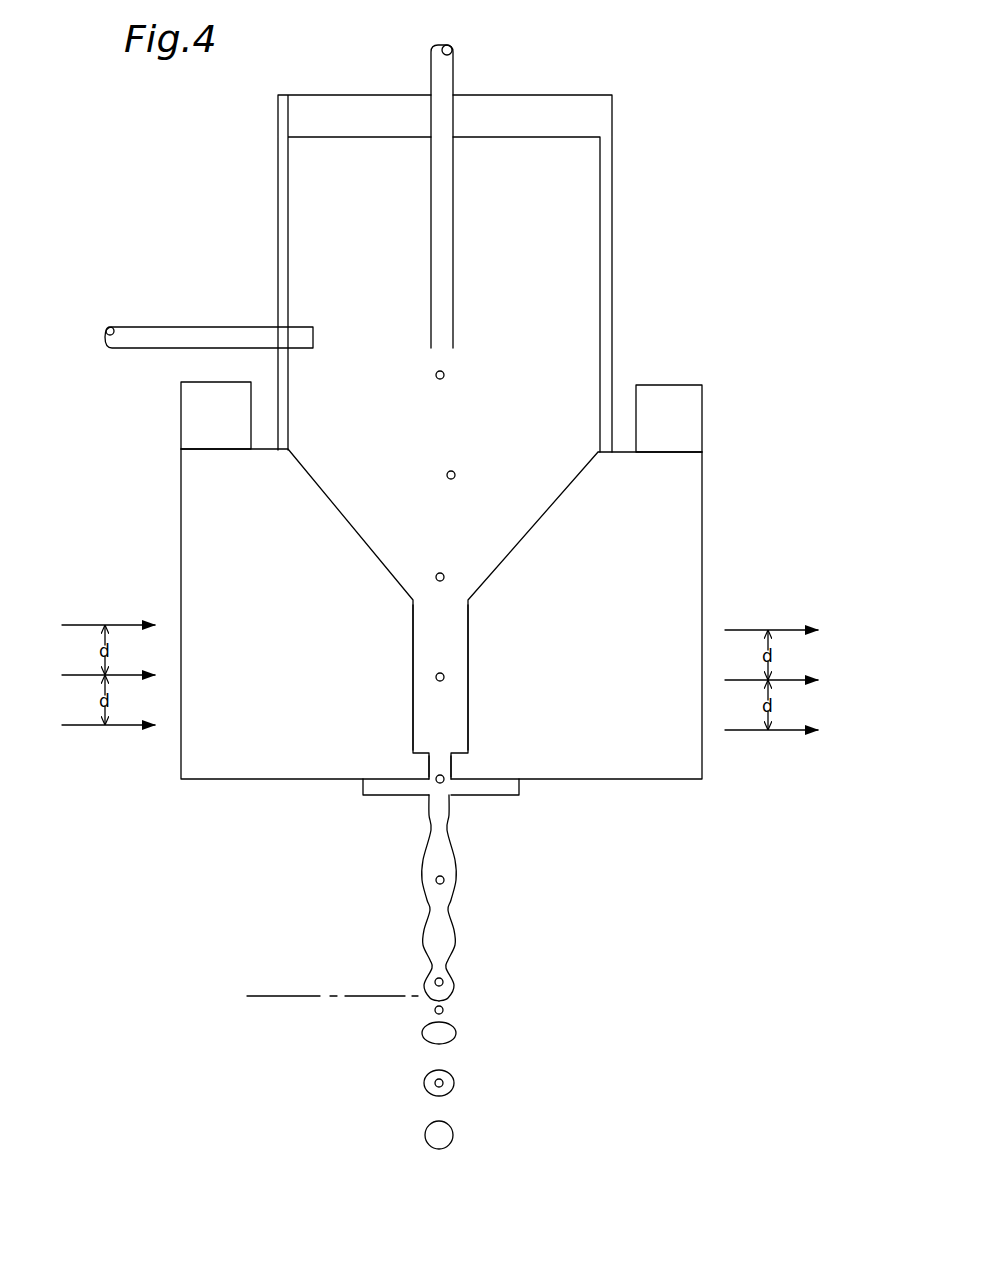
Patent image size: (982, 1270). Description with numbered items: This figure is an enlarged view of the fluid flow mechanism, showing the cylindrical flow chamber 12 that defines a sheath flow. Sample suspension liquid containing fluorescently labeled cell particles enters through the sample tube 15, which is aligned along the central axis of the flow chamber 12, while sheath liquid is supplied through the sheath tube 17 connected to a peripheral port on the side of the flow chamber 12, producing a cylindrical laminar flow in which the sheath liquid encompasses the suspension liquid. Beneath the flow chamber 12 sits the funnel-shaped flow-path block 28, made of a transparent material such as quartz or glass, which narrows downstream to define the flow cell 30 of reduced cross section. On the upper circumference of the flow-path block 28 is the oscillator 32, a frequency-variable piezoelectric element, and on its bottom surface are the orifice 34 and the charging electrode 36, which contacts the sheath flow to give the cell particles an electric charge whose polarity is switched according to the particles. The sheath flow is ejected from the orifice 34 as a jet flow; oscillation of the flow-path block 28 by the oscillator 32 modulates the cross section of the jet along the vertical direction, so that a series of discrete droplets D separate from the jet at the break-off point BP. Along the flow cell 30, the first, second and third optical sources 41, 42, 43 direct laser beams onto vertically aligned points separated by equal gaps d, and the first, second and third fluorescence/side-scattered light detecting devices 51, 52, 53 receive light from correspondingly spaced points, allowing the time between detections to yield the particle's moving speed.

The flow chamber 12 is at (610, 240).
The sample tube 15 is at (455, 75).
The sheath tube 17 is at (173, 327).
The flow-path block 28 is at (703, 542).
The flow cell 30 is at (468, 693).
The oscillator 32 is at (703, 414).
The orifice 34 is at (451, 778).
The charging electrode 36 is at (375, 795).
The first optical source 41 is at (94, 626).
The second optical source 42 is at (94, 676).
The third optical source 43 is at (94, 726).
The first fluorescence/side-scattered light detecting device 51 is at (789, 631).
The second fluorescence/side-scattered light detecting device 52 is at (789, 681).
The third fluorescence/side-scattered light detecting device 53 is at (789, 731).
The break-off point BP is at (266, 995).
The droplets D is at (455, 1082).